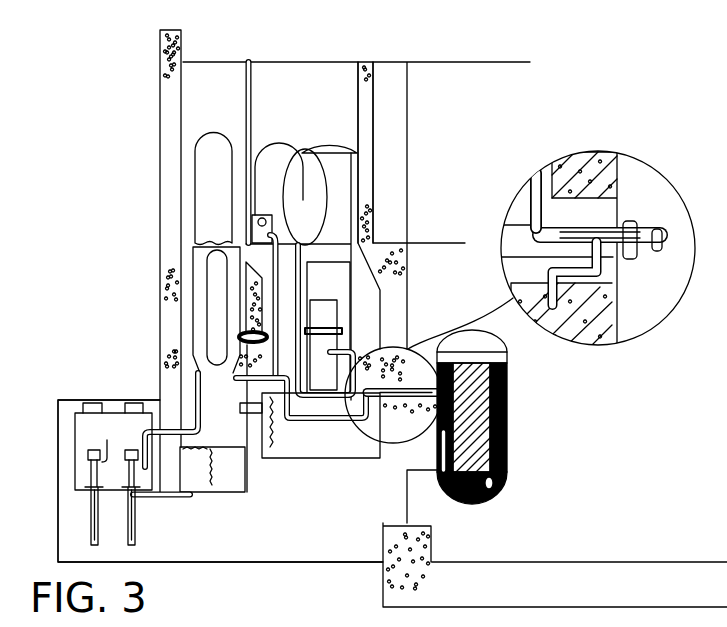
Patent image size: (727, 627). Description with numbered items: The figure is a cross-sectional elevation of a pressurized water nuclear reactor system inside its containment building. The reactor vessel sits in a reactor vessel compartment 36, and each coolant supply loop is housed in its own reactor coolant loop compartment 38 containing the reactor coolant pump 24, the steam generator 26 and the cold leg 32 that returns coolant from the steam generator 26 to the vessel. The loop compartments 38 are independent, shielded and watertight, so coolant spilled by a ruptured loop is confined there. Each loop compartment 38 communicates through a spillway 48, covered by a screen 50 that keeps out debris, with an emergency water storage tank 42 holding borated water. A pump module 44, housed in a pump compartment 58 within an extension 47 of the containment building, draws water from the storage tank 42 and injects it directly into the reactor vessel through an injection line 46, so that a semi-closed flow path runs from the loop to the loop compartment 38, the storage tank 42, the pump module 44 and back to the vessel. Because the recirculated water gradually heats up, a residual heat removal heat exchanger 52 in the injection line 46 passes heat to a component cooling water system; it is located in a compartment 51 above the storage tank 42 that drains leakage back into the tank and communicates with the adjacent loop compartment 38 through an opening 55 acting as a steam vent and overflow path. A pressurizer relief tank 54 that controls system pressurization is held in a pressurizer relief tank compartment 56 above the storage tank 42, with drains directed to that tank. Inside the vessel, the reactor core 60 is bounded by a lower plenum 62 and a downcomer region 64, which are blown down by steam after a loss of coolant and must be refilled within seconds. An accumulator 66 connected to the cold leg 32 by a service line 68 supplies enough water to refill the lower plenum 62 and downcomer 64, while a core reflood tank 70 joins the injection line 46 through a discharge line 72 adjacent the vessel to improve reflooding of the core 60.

The reactor coolant pump 24 is at (327, 342).
The steam generator 26 is at (360, 205).
The cold leg 32 is at (534, 254).
The reactor vessel compartment 36 is at (438, 456).
The reactor coolant loop compartment 38 is at (302, 78).
The emergency water storage tank 42 is at (238, 468).
The pump module 44 is at (138, 438).
The injection line 46 is at (198, 412).
The extension 47 is at (67, 452).
The spillway 48 is at (253, 413).
The screen 50 is at (272, 443).
The compartment 51 is at (200, 270).
The residual heat removal heat exchanger 52 is at (215, 345).
The pressurizer relief tank 54 is at (210, 168).
The opening 55 is at (240, 336).
The pressurizer relief tank compartment 56 is at (215, 78).
The pump compartment 58 is at (105, 427).
The reactor core 60 is at (507, 388).
The lower plenum 62 is at (492, 488).
The downcomer region 64 is at (440, 470).
The accumulator 66 is at (277, 160).
The service line 68 is at (255, 300).
The core reflood tank 70 is at (313, 185).
The discharge line 72 is at (388, 405).